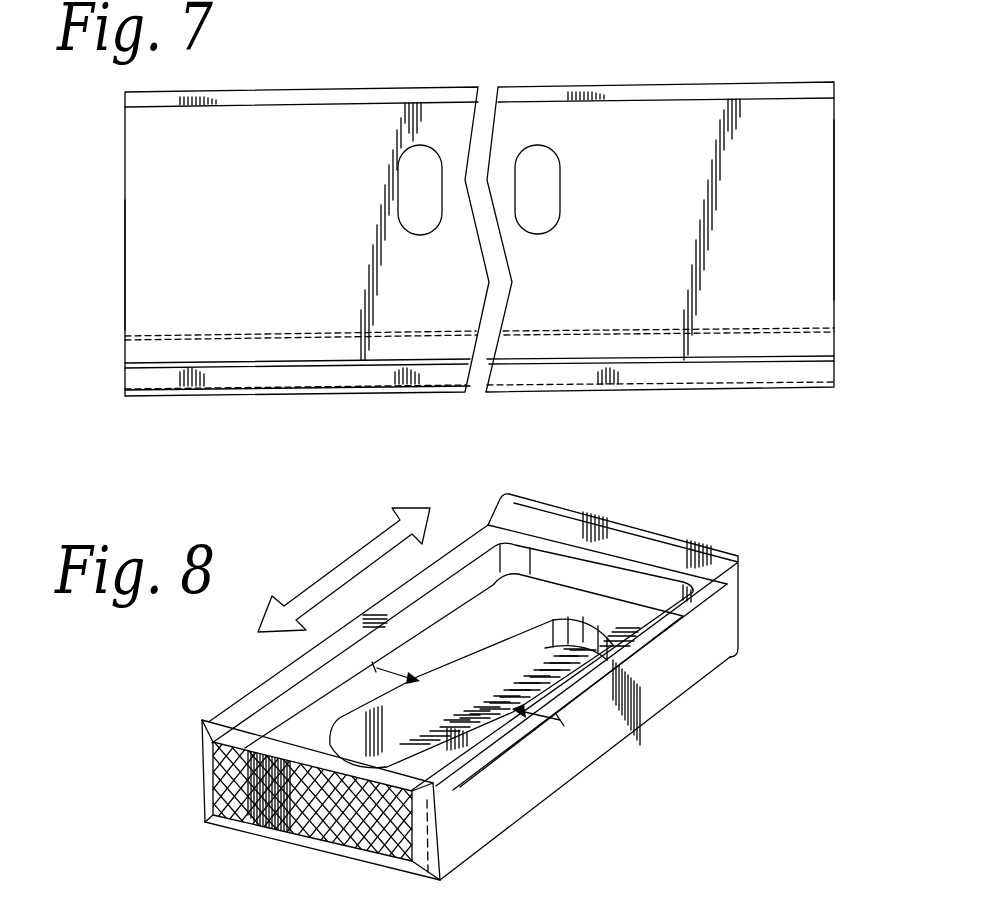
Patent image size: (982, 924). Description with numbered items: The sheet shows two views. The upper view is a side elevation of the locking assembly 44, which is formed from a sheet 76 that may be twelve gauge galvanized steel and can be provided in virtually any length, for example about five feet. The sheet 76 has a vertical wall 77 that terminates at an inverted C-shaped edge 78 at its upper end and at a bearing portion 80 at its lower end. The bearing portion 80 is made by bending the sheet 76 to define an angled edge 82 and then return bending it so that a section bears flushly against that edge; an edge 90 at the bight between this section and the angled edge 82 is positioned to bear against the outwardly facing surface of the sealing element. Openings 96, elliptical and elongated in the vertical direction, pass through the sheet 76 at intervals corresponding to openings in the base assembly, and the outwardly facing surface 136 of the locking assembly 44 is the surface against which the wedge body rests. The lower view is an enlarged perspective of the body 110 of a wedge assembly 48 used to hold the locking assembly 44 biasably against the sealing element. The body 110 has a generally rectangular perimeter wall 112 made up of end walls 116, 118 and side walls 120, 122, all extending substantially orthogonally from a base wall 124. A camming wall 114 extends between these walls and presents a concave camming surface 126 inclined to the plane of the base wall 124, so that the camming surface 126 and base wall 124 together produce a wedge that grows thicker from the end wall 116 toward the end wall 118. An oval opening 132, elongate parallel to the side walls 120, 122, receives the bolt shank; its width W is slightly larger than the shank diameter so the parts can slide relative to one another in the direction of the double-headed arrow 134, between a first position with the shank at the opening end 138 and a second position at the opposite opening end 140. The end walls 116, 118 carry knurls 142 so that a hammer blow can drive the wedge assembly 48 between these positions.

In FIG. 7, the locking assembly 44 is at (302, 125).
In FIG. 7, the inverted C-shaped edge 78 is at (233, 90).
In FIG. 7, the sheet 76 is at (290, 209).
In FIG. 7, the vertical wall 77 is at (150, 292).
In FIG. 7, the bearing portion 80 is at (130, 399).
In FIG. 7, the angled edge 82 is at (708, 0).
In FIG. 7, the edge 90 is at (620, 0).
In FIG. 7, the openings 96 is at (560, 200).
In FIG. 7, the outwardly facing surface 136 is at (815, 230).
In FIG. 8, the wedge assembly 48 is at (431, 667).
In FIG. 8, the body 110 is at (648, 703).
In FIG. 8, the perimeter wall 112 is at (692, 682).
In FIG. 8, the camming wall 114 is at (345, 738).
In FIG. 8, the end wall 116 is at (643, 528).
In FIG. 8, the end wall 118 is at (275, 820).
In FIG. 8, the side wall 120 is at (292, 660).
In FIG. 8, the side wall 122 is at (595, 752).
In FIG. 8, the base wall 124 is at (517, 827).
In FIG. 8, the camming surface 126 is at (457, 633).
In FIG. 8, the oval opening 132 is at (272, 780).
In FIG. 8, the double-headed arrow 134 is at (350, 565).
In FIG. 8, the opening end 138 is at (550, 640).
In FIG. 8, the opening end 140 is at (207, 722).
In FIG. 8, the knurls 142 is at (330, 830).
In FIG. 8, the width W is at (520, 708).